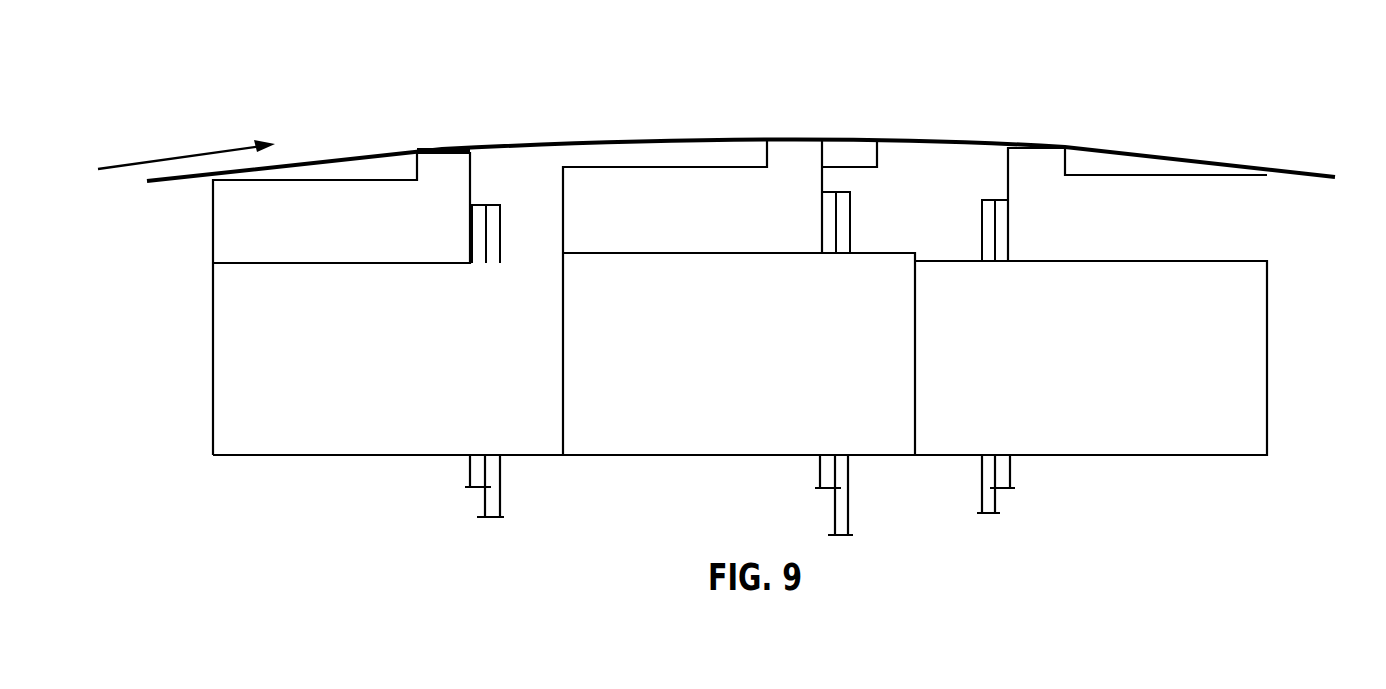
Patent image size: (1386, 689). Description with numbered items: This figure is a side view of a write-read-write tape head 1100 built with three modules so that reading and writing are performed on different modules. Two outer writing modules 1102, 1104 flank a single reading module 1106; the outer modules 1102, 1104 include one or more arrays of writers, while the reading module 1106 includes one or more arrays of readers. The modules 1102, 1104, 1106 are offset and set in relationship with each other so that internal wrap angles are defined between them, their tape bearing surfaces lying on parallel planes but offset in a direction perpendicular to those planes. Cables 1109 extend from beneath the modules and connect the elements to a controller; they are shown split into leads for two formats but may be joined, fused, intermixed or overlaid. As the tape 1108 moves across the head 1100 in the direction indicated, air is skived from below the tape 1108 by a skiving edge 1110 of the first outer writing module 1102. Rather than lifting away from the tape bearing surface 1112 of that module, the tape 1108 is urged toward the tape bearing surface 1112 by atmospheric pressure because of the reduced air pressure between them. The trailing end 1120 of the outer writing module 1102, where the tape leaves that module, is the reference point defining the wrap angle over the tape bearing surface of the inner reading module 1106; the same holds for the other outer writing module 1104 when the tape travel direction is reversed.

The write-read-write head 1100 is at (585, 107).
The first outer writing module 1102 is at (213, 230).
The outer writing module 1104 is at (1268, 224).
The reading module 1106 is at (708, 167).
The tape 1108 is at (1137, 150).
The cables 1109 is at (498, 480).
The skiving edge 1110 is at (415, 155).
The tape bearing surface 1112 is at (442, 149).
The trailing end 1120 is at (471, 154).